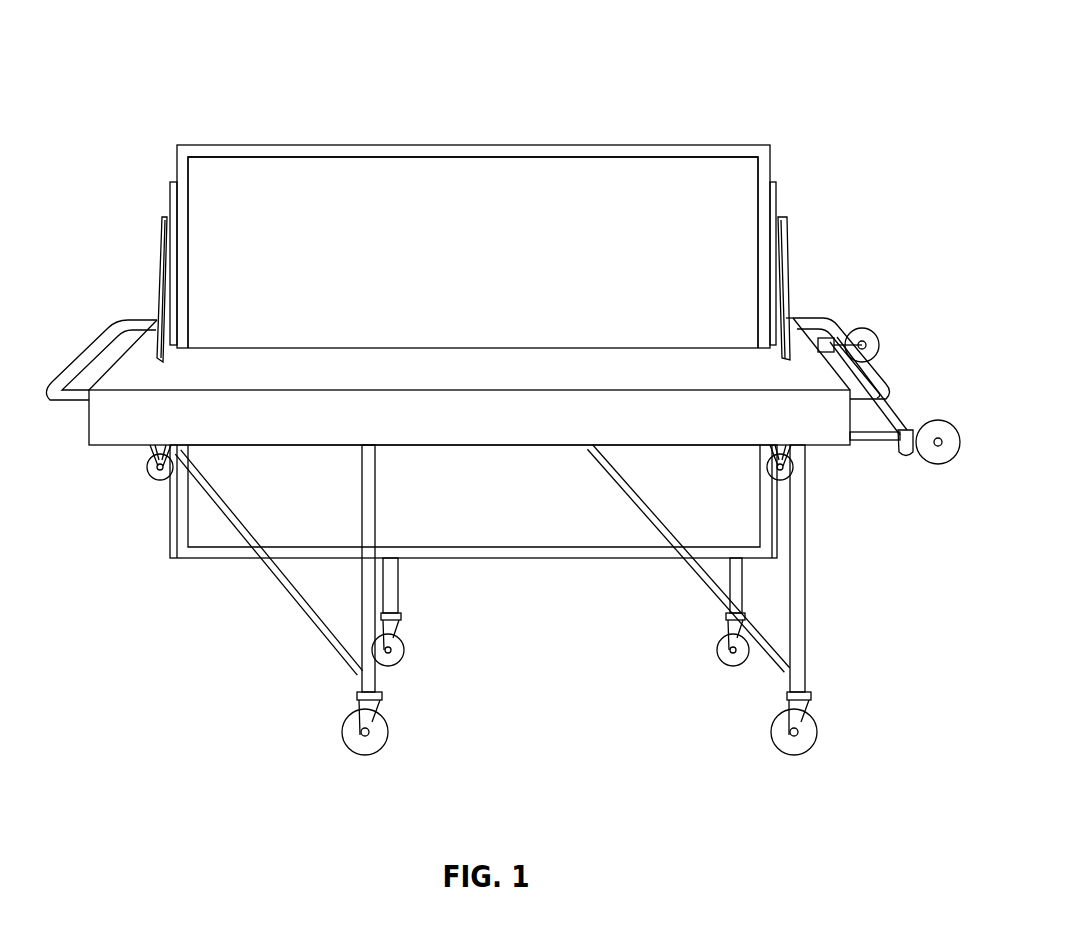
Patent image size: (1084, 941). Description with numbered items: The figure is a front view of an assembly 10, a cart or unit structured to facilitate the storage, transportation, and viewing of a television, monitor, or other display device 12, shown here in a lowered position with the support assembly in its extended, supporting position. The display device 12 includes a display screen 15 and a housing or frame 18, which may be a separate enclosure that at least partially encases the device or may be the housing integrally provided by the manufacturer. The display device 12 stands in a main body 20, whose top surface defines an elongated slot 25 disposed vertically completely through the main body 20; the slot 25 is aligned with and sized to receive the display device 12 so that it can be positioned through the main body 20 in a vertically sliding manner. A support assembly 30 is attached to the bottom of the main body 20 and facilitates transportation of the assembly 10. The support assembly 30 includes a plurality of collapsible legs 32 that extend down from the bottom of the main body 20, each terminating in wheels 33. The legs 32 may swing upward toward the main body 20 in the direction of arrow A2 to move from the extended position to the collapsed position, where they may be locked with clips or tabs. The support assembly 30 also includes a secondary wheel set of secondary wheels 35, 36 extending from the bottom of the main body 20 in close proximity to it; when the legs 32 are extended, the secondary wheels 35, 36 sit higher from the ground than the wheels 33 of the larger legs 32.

The assembly 10 is at (506, 45).
The display device 12 is at (613, 207).
The display screen 15 is at (506, 260).
The housing or frame 18 is at (383, 144).
The main body 20 is at (494, 415).
The slot 25 is at (277, 343).
The support assembly 30 is at (256, 605).
The collapsible legs 32 is at (360, 610).
The wheels 33 is at (403, 662).
The secondary wheels 35 is at (146, 470).
The secondary wheels 36 is at (868, 330).
The arrow A2 is at (272, 675).